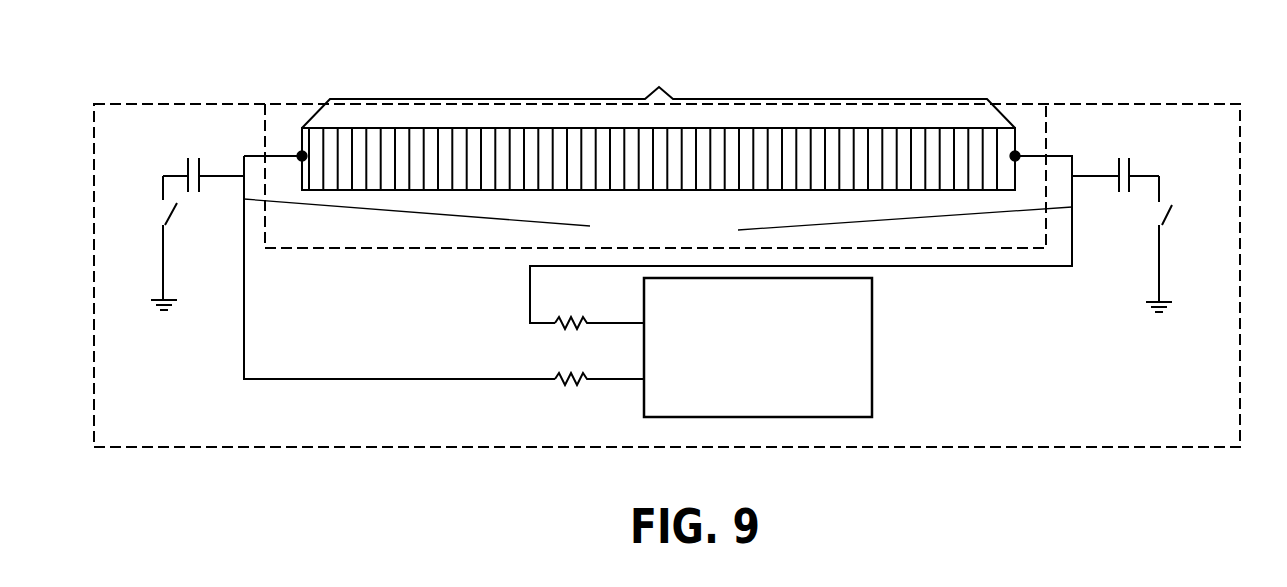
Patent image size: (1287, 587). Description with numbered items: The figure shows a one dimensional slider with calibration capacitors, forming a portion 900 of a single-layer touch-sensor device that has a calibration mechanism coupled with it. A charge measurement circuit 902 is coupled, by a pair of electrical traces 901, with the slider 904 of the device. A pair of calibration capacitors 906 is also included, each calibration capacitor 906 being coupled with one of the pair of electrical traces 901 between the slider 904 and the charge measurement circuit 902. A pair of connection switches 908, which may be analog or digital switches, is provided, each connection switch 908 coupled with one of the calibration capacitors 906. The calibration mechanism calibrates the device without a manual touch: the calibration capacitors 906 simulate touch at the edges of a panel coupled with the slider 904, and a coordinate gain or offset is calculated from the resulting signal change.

The portion of a single-layer touch-sensor device 900 is at (917, 38).
The pair of electrical traces 901 is at (332, 379).
The charge measurement circuit 902 is at (872, 358).
The slider 904 is at (765, 128).
The calibration capacitor 906 is at (183, 165).
The connection switch 908 is at (175, 222).